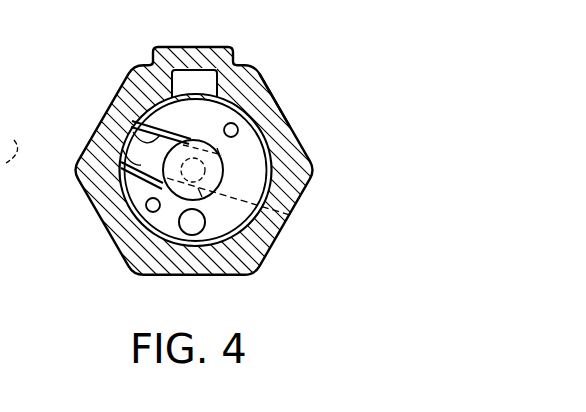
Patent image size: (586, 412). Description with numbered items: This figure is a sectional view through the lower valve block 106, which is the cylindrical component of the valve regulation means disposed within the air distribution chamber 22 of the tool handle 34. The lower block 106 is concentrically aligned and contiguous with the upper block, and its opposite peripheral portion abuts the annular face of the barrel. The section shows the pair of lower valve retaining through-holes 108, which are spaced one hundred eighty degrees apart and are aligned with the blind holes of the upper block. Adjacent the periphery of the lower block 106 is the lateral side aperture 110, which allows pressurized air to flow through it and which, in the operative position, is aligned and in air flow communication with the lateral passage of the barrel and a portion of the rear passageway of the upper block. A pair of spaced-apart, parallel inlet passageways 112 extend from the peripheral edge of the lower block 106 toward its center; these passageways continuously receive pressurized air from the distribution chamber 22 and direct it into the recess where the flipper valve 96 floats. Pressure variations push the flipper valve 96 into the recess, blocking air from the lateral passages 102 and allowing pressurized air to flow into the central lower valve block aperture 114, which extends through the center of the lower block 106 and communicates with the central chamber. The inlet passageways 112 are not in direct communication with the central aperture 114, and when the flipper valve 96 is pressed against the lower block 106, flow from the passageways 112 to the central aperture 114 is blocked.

The air distribution chamber 22 is at (196, 82).
The tool handle 34 is at (263, 86).
The flipper valve 96 is at (222, 178).
The lateral passages 102 is at (9, 140).
The lower valve block 106 is at (270, 155).
The lower valve retaining through-holes 108 is at (237, 126).
The lateral side aperture 110 is at (178, 225).
The inlet passageways 112 is at (120, 131).
The central lower valve block aperture 114 is at (290, 215).